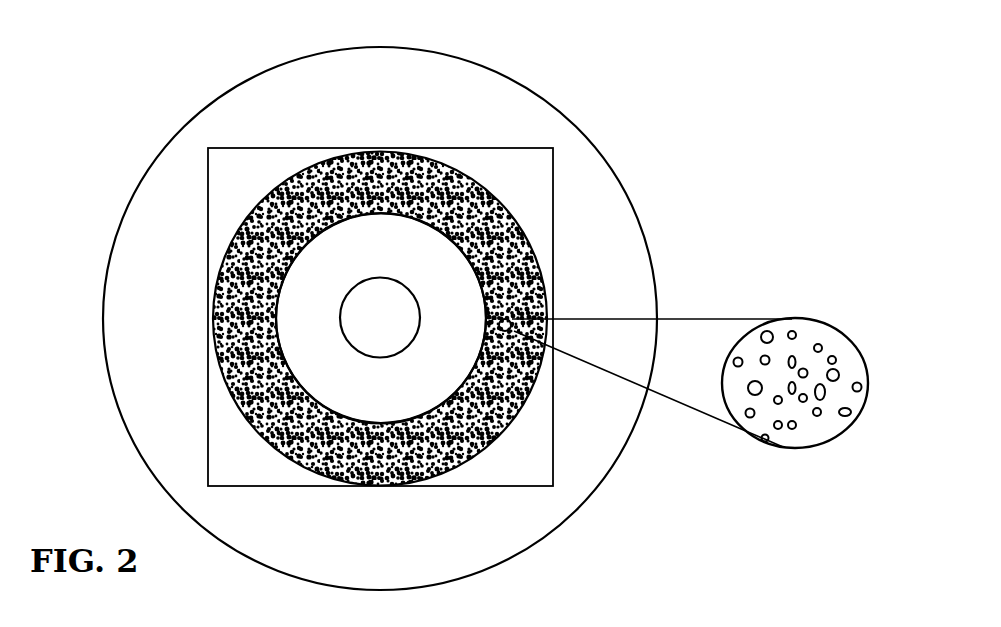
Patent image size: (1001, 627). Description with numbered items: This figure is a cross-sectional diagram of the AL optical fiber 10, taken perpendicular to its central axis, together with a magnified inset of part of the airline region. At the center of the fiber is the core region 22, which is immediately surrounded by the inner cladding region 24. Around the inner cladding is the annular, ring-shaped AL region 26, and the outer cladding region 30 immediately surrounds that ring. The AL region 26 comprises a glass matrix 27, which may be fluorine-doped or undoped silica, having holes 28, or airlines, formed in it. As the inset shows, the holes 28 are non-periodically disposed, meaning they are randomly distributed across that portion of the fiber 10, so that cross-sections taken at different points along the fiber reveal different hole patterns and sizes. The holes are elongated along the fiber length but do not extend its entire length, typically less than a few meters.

The AL optical fiber 10 is at (183, 60).
The core region 22 is at (398, 334).
The inner cladding region 24 is at (453, 295).
The annular AL region 26 is at (508, 257).
The glass matrix 27 is at (813, 333).
The holes 28 is at (822, 400).
The outer cladding region 30 is at (588, 216).